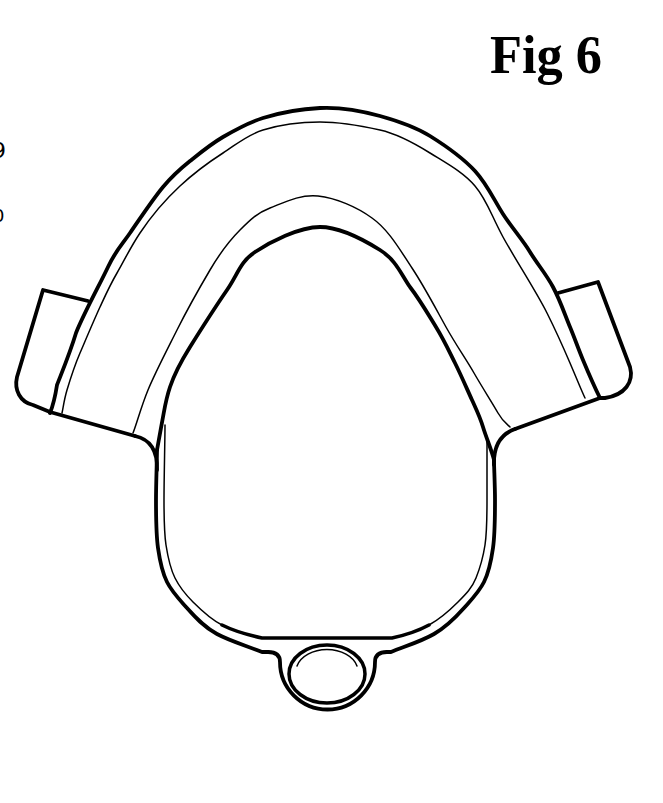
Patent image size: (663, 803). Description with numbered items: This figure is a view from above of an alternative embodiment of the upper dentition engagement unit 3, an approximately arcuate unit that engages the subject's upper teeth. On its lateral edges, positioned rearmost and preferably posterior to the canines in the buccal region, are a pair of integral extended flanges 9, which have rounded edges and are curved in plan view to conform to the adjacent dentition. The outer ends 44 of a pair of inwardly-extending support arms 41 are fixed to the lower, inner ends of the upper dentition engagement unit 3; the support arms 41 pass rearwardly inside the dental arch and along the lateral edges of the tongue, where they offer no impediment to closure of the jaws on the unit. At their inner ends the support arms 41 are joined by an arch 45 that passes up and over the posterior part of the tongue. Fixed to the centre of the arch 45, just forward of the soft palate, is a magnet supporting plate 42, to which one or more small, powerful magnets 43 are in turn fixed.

The upper dentition engagement unit 3 is at (232, 152).
The flanges 9 is at (580, 308).
The support arms 41 is at (157, 543).
The magnet supporting plate 42 is at (370, 673).
The magnets 43 is at (332, 677).
The outer ends 44 is at (500, 437).
The arch 45 is at (253, 645).